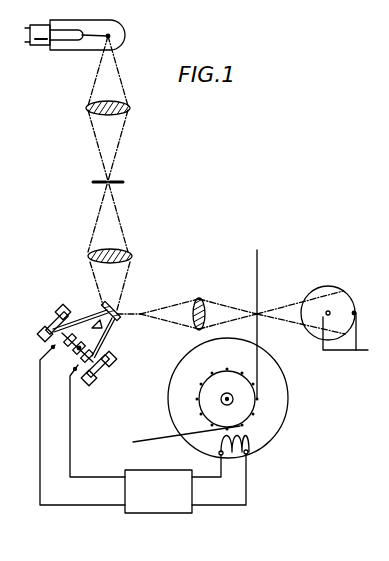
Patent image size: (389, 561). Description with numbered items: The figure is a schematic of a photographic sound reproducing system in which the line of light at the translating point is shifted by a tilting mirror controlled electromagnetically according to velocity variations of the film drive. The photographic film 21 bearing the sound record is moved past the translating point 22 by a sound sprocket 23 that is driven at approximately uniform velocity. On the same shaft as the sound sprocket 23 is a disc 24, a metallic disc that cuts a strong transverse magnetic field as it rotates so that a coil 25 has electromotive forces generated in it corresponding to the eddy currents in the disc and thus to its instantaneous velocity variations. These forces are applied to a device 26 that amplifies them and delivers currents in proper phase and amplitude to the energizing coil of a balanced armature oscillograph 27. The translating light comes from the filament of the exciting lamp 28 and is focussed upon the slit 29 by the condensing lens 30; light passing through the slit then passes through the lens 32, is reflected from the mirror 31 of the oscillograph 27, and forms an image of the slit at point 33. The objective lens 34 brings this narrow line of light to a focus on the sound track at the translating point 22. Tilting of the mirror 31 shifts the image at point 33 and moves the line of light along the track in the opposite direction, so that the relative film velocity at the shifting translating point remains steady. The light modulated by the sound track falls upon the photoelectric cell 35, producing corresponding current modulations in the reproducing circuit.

The photographic film 21 is at (257, 259).
The translating point 22 is at (255, 312).
The sound sprocket 23 is at (228, 370).
The disc 24 is at (168, 402).
The coil 25 is at (244, 440).
The amplifying device 26 is at (165, 470).
The oscillograph 27 is at (55, 320).
The exciting lamp 28 is at (125, 35).
The slit 29 is at (112, 179).
The condensing lens 30 is at (130, 108).
The mirror 31 is at (100, 307).
The lens 32 is at (132, 257).
The image point 33 is at (140, 314).
The objective lens 34 is at (201, 298).
The photoelectric cell 35 is at (345, 298).